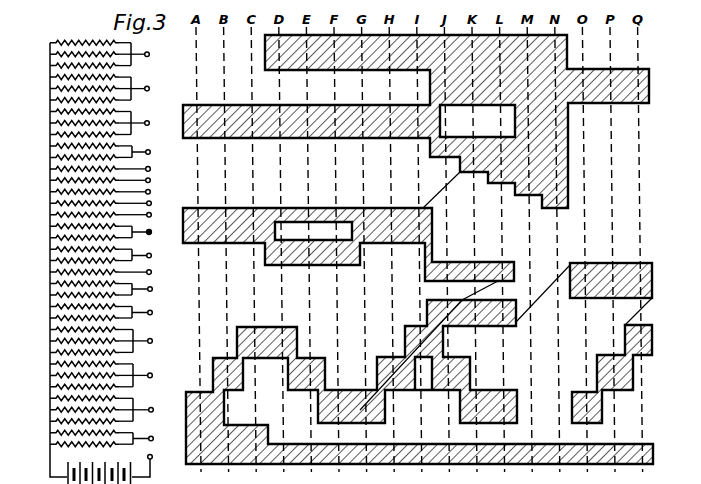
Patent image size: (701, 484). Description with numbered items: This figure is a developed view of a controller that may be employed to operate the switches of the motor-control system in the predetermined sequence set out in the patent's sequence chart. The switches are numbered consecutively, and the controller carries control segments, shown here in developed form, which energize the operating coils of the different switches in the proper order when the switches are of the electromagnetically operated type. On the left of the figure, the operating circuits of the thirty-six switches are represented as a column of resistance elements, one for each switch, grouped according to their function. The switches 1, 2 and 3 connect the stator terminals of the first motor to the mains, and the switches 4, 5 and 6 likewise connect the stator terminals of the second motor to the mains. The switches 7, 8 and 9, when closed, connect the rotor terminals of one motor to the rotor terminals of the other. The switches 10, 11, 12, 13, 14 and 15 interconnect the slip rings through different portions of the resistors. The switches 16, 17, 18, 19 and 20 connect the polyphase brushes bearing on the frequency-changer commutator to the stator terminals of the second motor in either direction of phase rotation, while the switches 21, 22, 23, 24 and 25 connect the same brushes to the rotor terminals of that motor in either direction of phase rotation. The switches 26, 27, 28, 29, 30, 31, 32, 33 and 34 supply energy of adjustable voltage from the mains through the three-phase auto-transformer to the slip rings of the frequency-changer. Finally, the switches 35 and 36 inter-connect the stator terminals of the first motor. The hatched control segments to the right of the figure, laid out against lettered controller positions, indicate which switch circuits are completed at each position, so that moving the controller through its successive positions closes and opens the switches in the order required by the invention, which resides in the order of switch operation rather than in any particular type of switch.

The switch 1 is at (79, 39).
The switch 2 is at (89, 51).
The switch 3 is at (76, 63).
The switch 4 is at (79, 73).
The switch 5 is at (83, 84).
The switch 6 is at (80, 96).
The switch 7 is at (77, 108).
The switch 8 is at (89, 118).
The switch 9 is at (76, 130).
The switch 10 is at (79, 141).
The switch 11 is at (73, 154).
The switch 12 is at (89, 164).
The switch 13 is at (81, 178).
The switch 14 is at (89, 189).
The switch 15 is at (80, 201).
The switch 16 is at (88, 213).
The switch 17 is at (70, 223).
The switch 18 is at (79, 249).
The switch 19 is at (72, 246).
The switch 20 is at (79, 245).
The switch 21 is at (80, 269).
The switch 22 is at (79, 279).
The switch 23 is at (79, 301).
The switch 24 is at (67, 312).
The switch 25 is at (69, 302).
The switch 26 is at (80, 325).
The switch 27 is at (77, 352).
The switch 28 is at (81, 375).
The switch 29 is at (70, 349).
The switch 30 is at (87, 371).
The switch 31 is at (71, 398).
The switch 32 is at (79, 372).
The switch 33 is at (80, 394).
The switch 34 is at (80, 418).
The switch 35 is at (70, 429).
The switch 36 is at (80, 441).